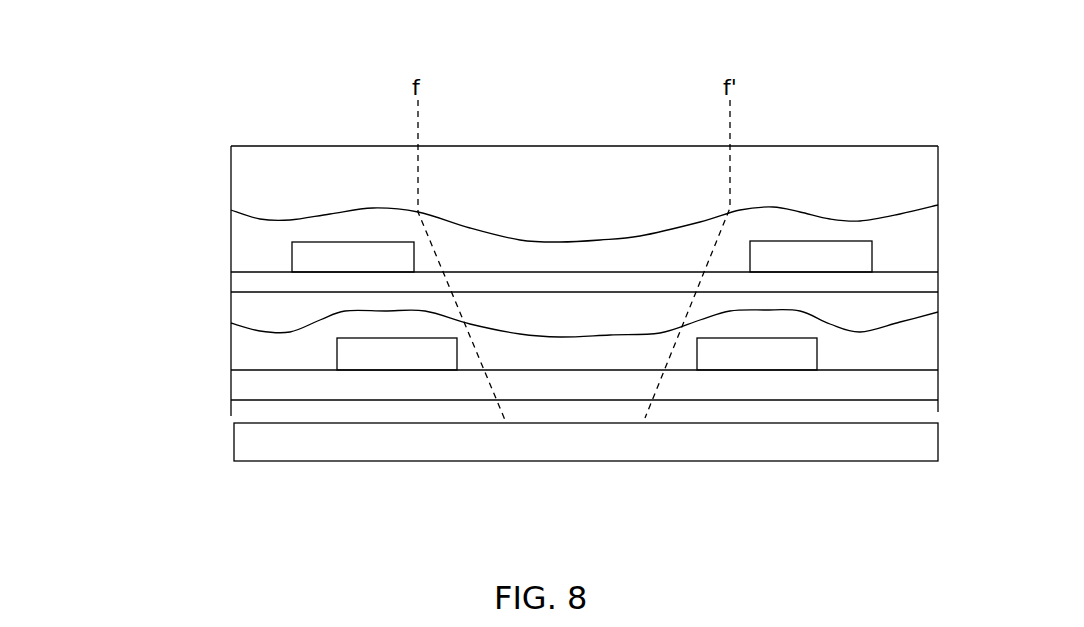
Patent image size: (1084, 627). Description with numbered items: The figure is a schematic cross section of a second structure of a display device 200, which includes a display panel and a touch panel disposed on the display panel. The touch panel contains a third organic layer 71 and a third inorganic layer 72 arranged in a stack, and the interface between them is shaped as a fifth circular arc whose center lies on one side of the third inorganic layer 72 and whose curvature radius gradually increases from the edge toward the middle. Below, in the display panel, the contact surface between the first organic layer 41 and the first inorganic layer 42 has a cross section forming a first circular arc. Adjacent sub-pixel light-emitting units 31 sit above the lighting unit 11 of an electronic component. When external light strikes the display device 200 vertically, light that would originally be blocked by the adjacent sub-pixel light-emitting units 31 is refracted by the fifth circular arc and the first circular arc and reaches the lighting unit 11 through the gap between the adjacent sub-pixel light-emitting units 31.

The display device 200 is at (182, 82).
The third inorganic layer 72 is at (267, 178).
The third organic layer 71 is at (267, 243).
The first inorganic layer 42 is at (267, 307).
The first organic layer 41 is at (267, 345).
The sub-pixel light-emitting unit 31 is at (393, 357).
The lighting unit 11 is at (270, 449).